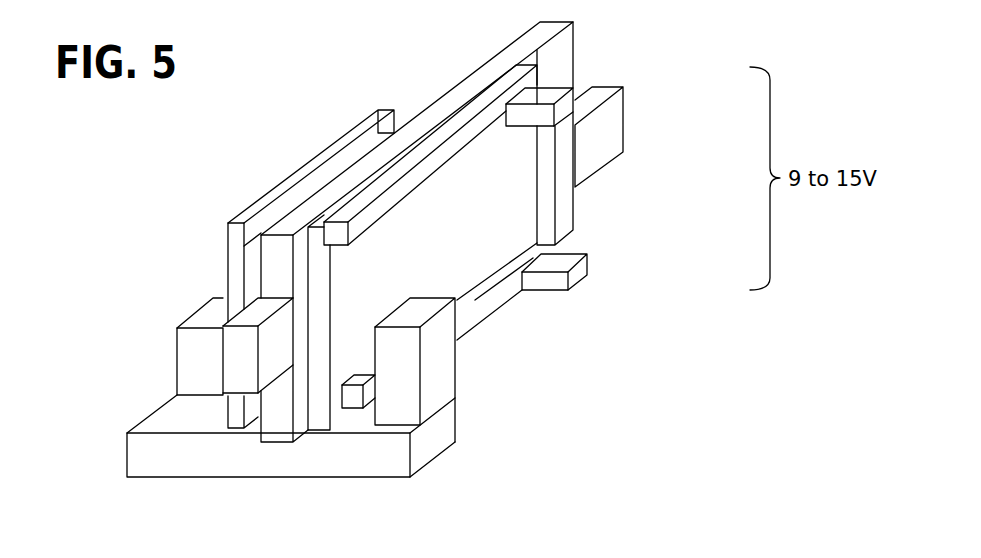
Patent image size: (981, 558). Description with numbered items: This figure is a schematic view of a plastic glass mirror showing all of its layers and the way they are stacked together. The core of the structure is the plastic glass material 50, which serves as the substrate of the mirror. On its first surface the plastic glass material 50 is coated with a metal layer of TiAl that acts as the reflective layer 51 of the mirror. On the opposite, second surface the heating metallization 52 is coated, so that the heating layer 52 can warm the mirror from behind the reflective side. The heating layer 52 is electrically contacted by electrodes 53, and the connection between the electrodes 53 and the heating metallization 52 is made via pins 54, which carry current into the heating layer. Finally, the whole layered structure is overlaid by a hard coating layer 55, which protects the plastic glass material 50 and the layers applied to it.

The plastic glass material 50 is at (485, 59).
The second bus bar 51 is at (226, 240).
The heating metallization 52 is at (438, 263).
The electrodes 53 is at (473, 318).
The pins 54 is at (578, 103).
The hard coating layer 55 is at (154, 453).